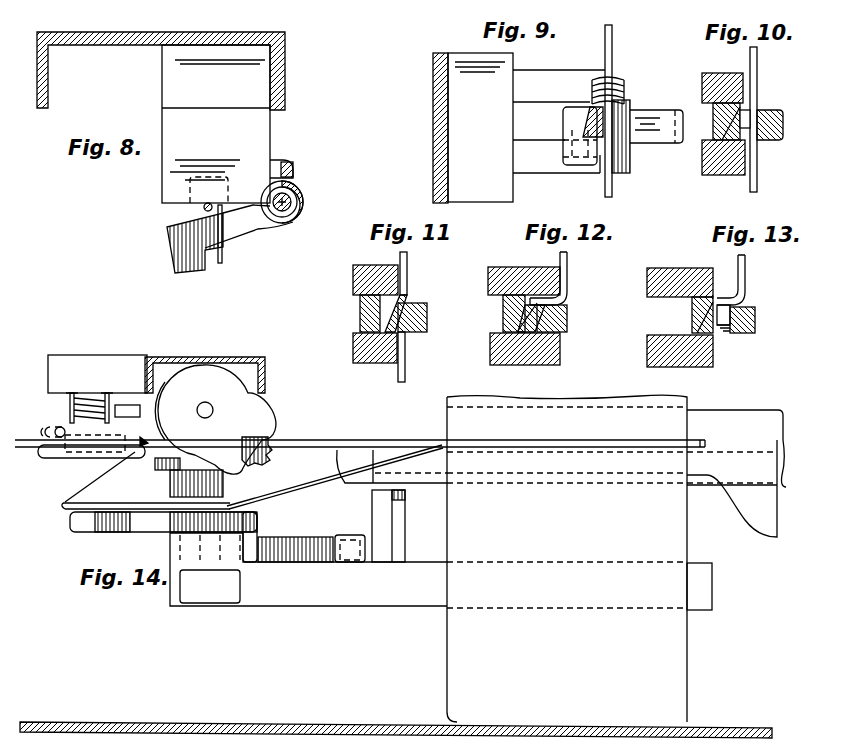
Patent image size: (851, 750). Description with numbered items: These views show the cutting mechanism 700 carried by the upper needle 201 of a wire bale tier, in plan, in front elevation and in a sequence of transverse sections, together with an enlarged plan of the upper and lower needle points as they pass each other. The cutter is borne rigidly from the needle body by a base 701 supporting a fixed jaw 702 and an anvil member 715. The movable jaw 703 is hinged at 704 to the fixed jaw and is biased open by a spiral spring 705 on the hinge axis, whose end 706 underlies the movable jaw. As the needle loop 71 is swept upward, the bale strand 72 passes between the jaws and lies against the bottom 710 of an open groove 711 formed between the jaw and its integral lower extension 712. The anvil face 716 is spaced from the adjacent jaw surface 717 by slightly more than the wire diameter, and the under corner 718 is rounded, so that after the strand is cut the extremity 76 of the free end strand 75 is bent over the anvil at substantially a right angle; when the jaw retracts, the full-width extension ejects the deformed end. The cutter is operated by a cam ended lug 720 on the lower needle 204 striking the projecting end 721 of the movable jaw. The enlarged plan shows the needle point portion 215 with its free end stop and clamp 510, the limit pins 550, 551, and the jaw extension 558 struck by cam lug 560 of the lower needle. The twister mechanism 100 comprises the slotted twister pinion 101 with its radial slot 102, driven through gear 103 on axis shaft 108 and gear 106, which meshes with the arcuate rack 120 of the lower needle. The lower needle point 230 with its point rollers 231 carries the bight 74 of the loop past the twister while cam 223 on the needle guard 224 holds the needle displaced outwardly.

In FIG. 8, the upper needle 201 is at (288, 73).
In FIG. 14, the upper needle 201 is at (195, 355).
In FIG. 8, the base 701 is at (247, 123).
In FIG. 8, the lower extension 712 is at (190, 190).
In FIG. 11, the lower extension 712 is at (365, 314).
In FIG. 12, the lower extension 712 is at (505, 310).
In FIG. 8, the cutting mechanism 700 is at (287, 156).
In FIG. 8, the spring end 706 is at (283, 230).
In FIG. 8, the hinge axis 704 is at (293, 202).
In FIG. 9, the hinge axis 704 is at (597, 82).
In FIG. 8, the movable jaw 703 is at (238, 241).
In FIG. 9, the movable jaw 703 is at (663, 135).
In FIG. 10, the movable jaw 703 is at (770, 113).
In FIG. 12, the movable jaw 703 is at (567, 330).
In FIG. 8, the groove bottom 710 is at (222, 258).
In FIG. 8, the outwardly projecting end 721 is at (192, 275).
In FIG. 9, the anvil member 715 is at (559, 121).
In FIG. 11, the anvil member 715 is at (388, 275).
In FIG. 12, the anvil member 715 is at (565, 280).
In FIG. 9, the spiral spring 705 is at (623, 88).
In FIG. 9, the fixed jaw 702 is at (585, 167).
In FIG. 10, the fixed jaw 702 is at (740, 157).
In FIG. 11, the fixed jaw 702 is at (390, 348).
In FIG. 12, the fixed jaw 702 is at (555, 352).
In FIG. 13, the fixed jaw 702 is at (713, 358).
In FIG. 10, the bale strand 72 is at (757, 185).
In FIG. 14, the bale strand 72 is at (282, 492).
In FIG. 10, the extremity of the free end strand 76 is at (752, 110).
In FIG. 12, the extremity of the free end strand 76 is at (530, 345).
In FIG. 13, the extremity of the free end strand 76 is at (727, 303).
In FIG. 12, the anvil face 716 is at (540, 305).
In FIG. 13, the anvil face 716 is at (663, 300).
In FIG. 12, the movable jaw surface 717 is at (567, 305).
In FIG. 13, the movable jaw surface 717 is at (750, 308).
In FIG. 12, the under corner 718 is at (552, 318).
In FIG. 12, the open groove 711 is at (520, 325).
In FIG. 13, the open groove 711 is at (727, 333).
In FIG. 13, the free end strand 75 is at (746, 277).
In FIG. 14, the needle point portion 215 is at (90, 363).
In FIG. 14, the pin 551 is at (68, 405).
In FIG. 14, the pin 550 is at (129, 405).
In FIG. 14, the free end stop and clamp 510 is at (43, 420).
In FIG. 14, the point roller 231 is at (65, 512).
In FIG. 14, the gear 103 is at (215, 419).
In FIG. 14, the jaw extension 558 is at (190, 406).
In FIG. 14, the axis shaft 108 is at (258, 407).
In FIG. 14, the twister mechanism 100 is at (304, 412).
In FIG. 14, the radial slot 102 is at (275, 440).
In FIG. 14, the slotted twister pinion 101 is at (270, 452).
In FIG. 14, the twister driving gear 106 is at (225, 485).
In FIG. 14, the bight 74 is at (130, 503).
In FIG. 14, the needle loop 71 is at (68, 498).
In FIG. 14, the lower needle point 230 is at (120, 530).
In FIG. 14, the lower needle 204 is at (333, 597).
In FIG. 14, the arcuate rack 120 is at (290, 537).
In FIG. 14, the cam ended lug 720 is at (347, 535).
In FIG. 14, the cam lug 560 is at (405, 517).
In FIG. 14, the needle guard 224 is at (740, 410).
In FIG. 14, the cam 223 is at (742, 512).